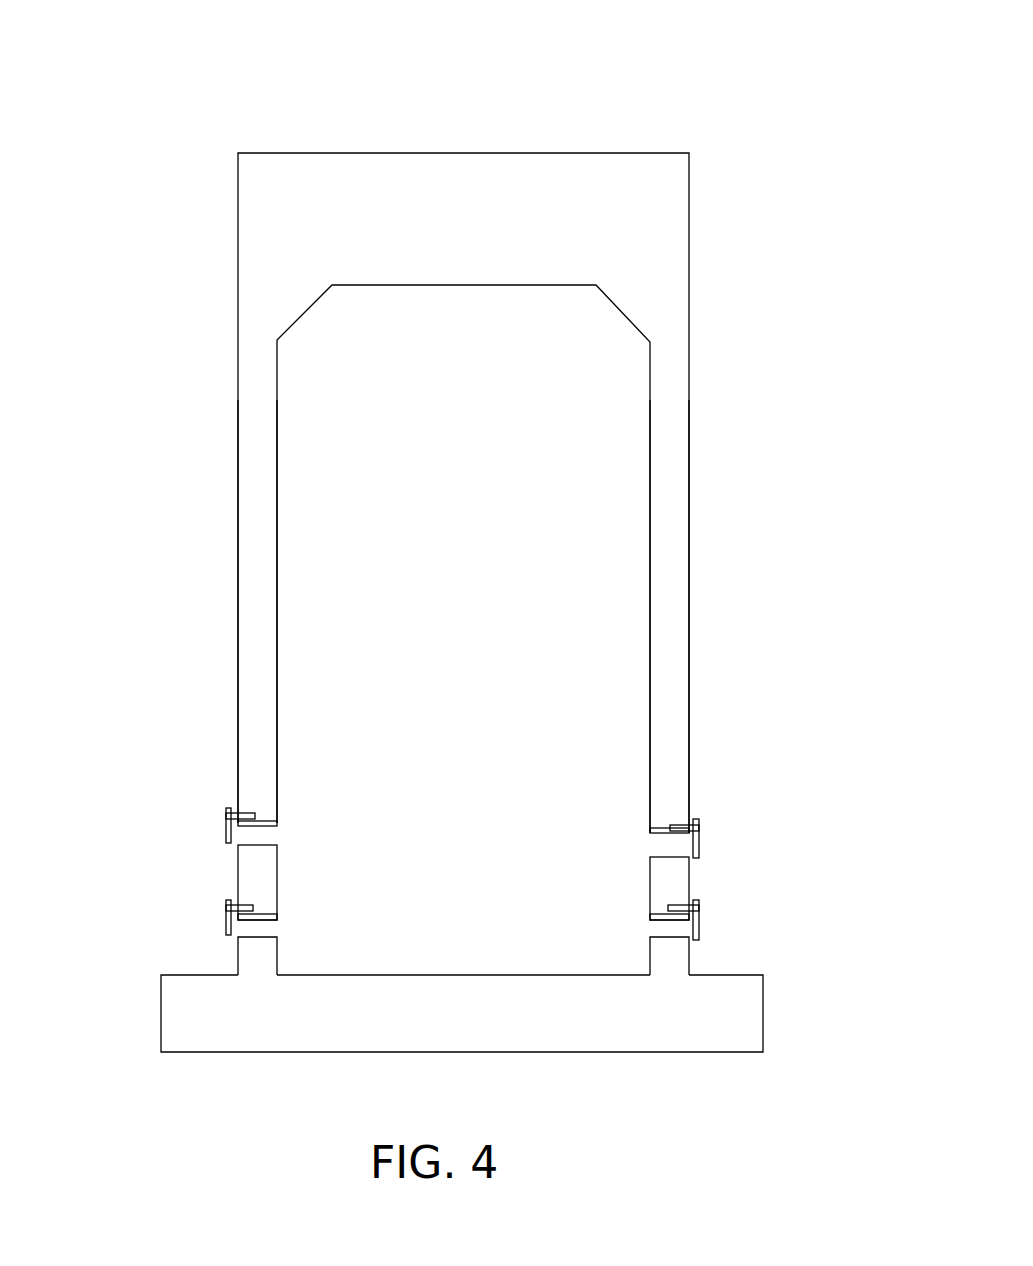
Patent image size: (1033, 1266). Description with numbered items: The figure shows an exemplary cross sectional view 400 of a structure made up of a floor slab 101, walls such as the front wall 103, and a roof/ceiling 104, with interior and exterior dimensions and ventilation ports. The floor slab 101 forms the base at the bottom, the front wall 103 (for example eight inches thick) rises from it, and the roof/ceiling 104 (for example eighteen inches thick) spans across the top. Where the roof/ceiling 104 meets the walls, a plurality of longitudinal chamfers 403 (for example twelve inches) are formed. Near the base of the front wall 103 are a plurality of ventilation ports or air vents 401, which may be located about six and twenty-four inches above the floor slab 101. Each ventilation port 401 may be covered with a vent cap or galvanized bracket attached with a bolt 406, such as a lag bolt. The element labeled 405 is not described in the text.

The cross sectional view 400 is at (600, 108).
The roof/ceiling 104 is at (689, 212).
The longitudinal chamfers 403 is at (640, 330).
The front wall 103 is at (277, 705).
The ventilation ports or air vents 401 is at (250, 848).
The bolt 406 is at (680, 820).
The right connector bracket 405 is at (697, 842).
The floor slab 101 is at (443, 1052).